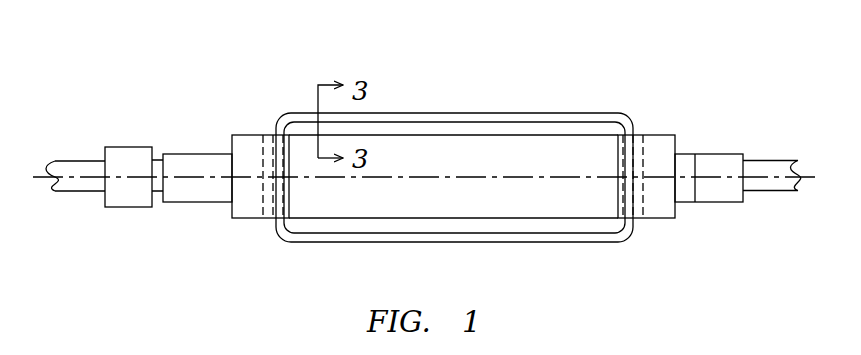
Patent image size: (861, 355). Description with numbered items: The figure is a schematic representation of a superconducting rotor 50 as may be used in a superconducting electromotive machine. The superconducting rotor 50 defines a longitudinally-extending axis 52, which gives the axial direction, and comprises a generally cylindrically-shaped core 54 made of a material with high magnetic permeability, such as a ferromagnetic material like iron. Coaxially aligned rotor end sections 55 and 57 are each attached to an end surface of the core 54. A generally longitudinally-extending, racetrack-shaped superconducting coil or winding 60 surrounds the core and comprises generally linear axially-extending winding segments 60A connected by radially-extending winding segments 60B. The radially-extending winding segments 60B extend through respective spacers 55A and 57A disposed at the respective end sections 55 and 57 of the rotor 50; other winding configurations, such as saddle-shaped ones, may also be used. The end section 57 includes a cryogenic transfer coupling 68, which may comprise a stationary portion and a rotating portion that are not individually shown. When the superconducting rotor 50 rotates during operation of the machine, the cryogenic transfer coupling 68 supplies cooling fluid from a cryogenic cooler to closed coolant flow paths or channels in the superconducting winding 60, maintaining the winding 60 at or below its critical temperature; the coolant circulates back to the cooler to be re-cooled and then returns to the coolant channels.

The superconducting rotor 50 is at (626, 69).
The longitudinally-extending axis 52 is at (442, 176).
The core 54 is at (482, 217).
The rotor end section 55 is at (718, 203).
The spacer 55A is at (638, 218).
The rotor end section 57 is at (200, 203).
The spacer 57A is at (277, 222).
The superconducting coil or winding 60 is at (522, 113).
The axially-extending winding segments 60A is at (598, 113).
The radially-extending winding segments 60B is at (273, 160).
The cryogenic transfer coupling 68 is at (130, 146).